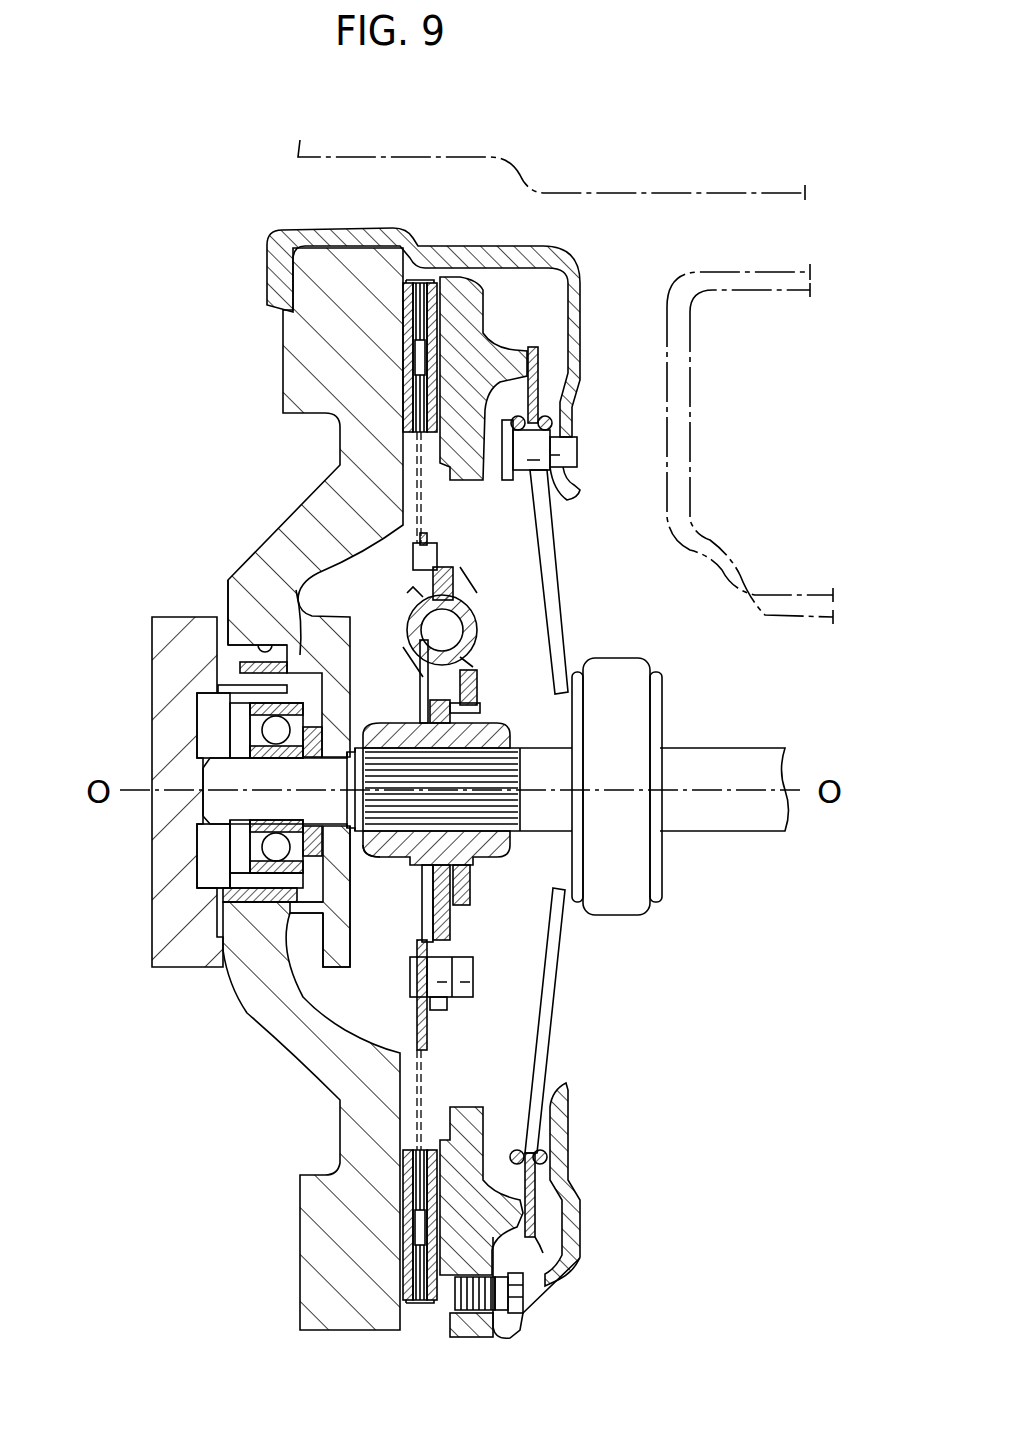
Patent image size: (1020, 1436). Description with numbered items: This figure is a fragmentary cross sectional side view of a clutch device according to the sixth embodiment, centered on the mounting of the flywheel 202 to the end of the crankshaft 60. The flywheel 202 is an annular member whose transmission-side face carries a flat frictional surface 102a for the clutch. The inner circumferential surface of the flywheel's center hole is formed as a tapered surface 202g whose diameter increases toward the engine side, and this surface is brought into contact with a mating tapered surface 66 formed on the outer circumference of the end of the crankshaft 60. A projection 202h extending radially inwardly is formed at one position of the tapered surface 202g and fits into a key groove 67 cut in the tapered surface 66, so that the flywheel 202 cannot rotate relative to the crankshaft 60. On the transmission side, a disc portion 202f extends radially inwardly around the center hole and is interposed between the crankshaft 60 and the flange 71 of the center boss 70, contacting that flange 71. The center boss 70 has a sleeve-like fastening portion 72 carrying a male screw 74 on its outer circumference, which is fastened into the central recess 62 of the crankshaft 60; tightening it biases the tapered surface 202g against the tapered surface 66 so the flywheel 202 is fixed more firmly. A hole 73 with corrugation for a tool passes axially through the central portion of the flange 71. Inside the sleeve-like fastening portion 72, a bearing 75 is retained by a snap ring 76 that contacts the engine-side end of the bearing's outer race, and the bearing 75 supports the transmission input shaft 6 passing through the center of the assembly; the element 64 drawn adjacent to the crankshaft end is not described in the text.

The input shaft 6 is at (750, 747).
The crankshaft 60 is at (170, 693).
The central recess 62 is at (205, 853).
The retaining plate 64 is at (222, 915).
The tapered surface 66 is at (228, 612).
The key groove 67 is at (248, 878).
The center boss 70 is at (365, 694).
The flange 71 is at (337, 917).
The sleeve-like fastening portion 72 is at (230, 866).
The hole 73 is at (355, 838).
The male screw 74 is at (240, 668).
The bearing 75 is at (232, 737).
The snap ring 76 is at (250, 850).
The frictional surface 102a is at (418, 246).
The flywheel 202 is at (318, 397).
The disc portion 202f is at (347, 640).
The tapered surface 202g is at (273, 640).
The projection 202h is at (247, 905).